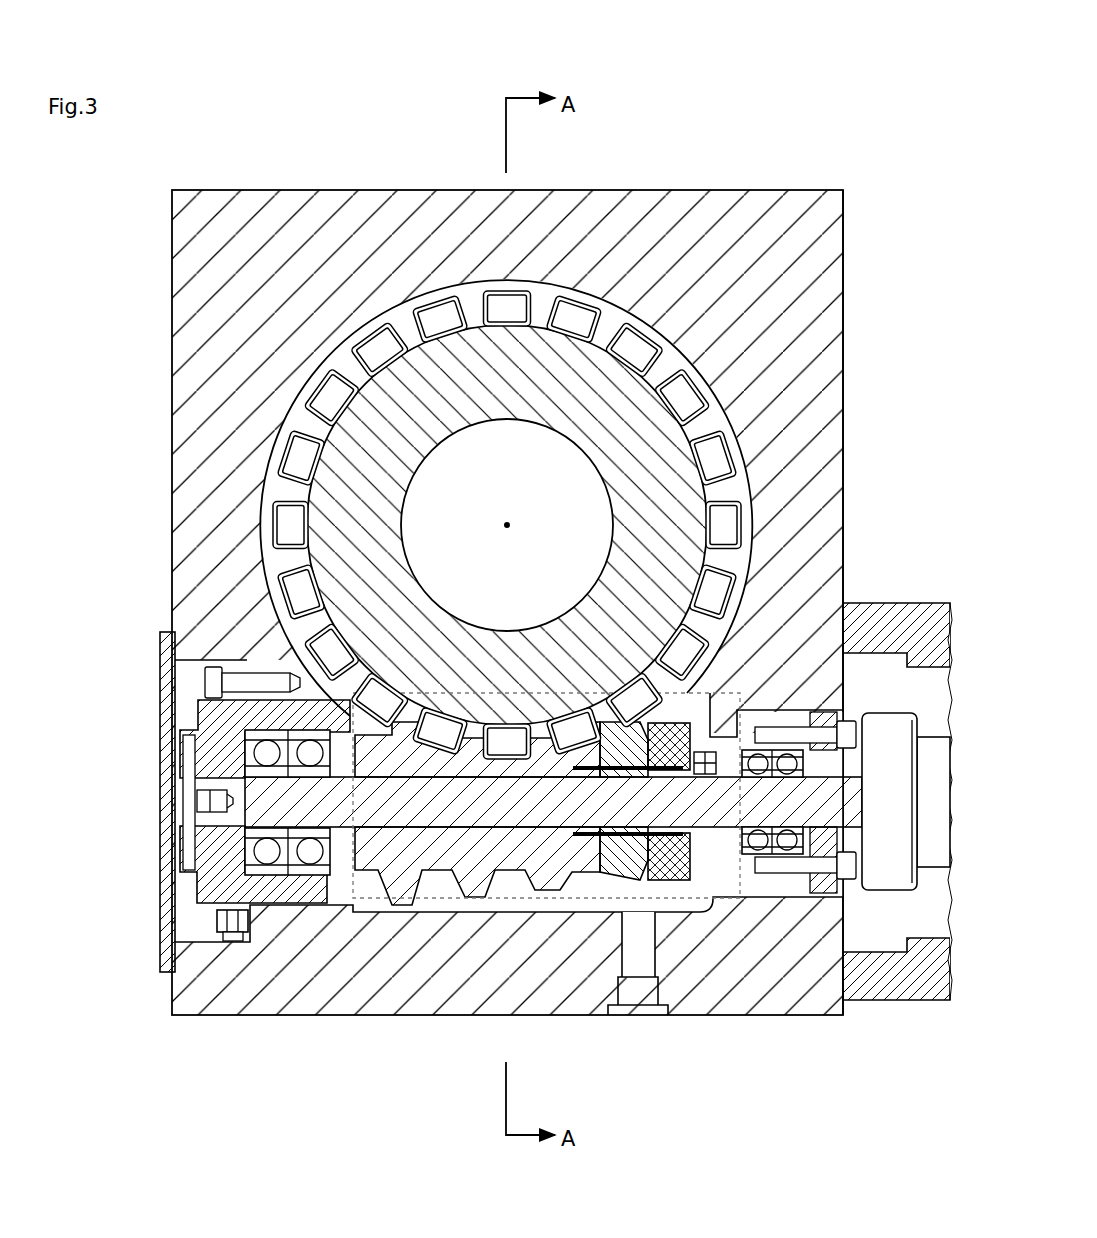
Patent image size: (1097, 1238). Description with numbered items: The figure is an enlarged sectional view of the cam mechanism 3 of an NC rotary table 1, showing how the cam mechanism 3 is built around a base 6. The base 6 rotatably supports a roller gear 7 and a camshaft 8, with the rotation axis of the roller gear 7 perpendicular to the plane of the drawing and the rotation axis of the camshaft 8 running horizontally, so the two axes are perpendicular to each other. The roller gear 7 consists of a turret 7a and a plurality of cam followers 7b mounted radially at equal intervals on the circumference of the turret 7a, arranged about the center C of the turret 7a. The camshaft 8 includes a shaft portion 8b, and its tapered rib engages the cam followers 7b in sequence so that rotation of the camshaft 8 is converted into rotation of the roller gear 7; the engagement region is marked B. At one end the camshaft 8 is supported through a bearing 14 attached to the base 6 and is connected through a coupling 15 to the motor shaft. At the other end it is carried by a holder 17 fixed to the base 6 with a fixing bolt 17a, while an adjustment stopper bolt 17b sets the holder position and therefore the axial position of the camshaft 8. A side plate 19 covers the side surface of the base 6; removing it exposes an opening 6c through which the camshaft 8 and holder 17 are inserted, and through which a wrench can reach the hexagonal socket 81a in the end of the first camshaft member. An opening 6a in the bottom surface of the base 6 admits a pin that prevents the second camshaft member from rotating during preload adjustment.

The NC rotary table 1 is at (922, 396).
The cam mechanism 3 is at (880, 283).
The base 6 is at (832, 522).
The opening 6a is at (638, 993).
The opening 6c is at (190, 686).
The roller gear 7 is at (358, 298).
The turret 7a is at (398, 522).
The cam followers 7b is at (590, 325).
The camshaft 8 is at (535, 882).
The shaft portion 8b is at (554, 816).
The bearing 14 is at (753, 855).
The coupling 15 is at (888, 916).
The holder 17 is at (195, 916).
The fixing bolt 17a is at (217, 680).
The adjustment stopper bolt 17b is at (233, 922).
The side plate 19 is at (175, 740).
The hexagonal socket 81a is at (202, 803).
The gear meshing region B is at (546, 795).
The center C is at (515, 515).